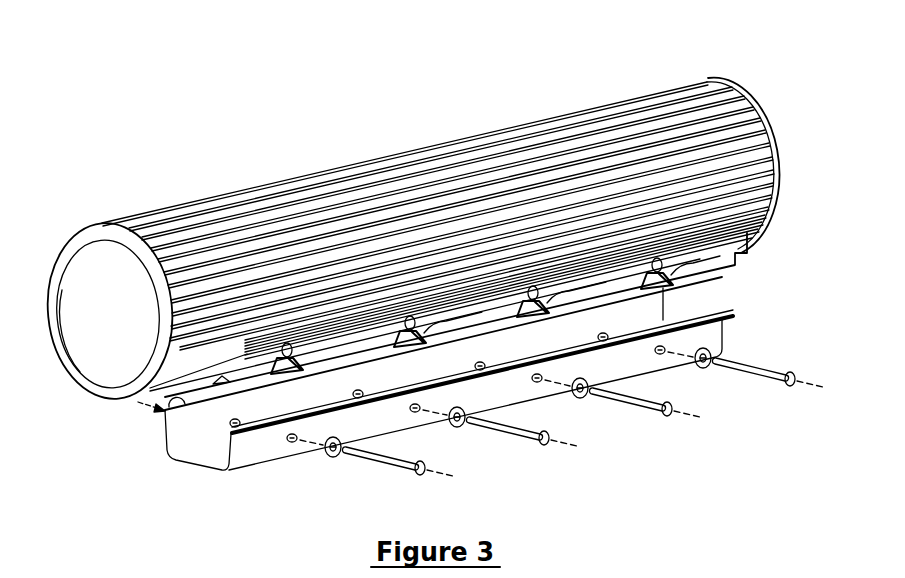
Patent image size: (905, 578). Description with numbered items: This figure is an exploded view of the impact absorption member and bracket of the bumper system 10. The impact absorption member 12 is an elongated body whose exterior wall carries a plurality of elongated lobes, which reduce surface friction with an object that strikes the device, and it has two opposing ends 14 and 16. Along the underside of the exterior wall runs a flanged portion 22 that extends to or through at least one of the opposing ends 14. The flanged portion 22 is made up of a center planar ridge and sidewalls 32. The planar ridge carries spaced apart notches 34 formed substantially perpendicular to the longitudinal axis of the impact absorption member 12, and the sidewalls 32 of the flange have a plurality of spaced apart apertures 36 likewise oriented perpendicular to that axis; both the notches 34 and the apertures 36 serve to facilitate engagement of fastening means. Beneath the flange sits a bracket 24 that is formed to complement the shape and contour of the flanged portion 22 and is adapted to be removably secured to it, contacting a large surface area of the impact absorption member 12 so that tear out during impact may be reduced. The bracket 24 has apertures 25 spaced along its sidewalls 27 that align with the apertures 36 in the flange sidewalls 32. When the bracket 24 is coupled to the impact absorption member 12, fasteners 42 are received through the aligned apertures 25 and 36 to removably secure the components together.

The bumper system 10 is at (600, 86).
The impact absorption member 12 is at (705, 85).
The opposing end 14 is at (775, 148).
The opposing end 16 is at (110, 348).
The flanged portion 22 is at (733, 242).
The bracket 24 is at (712, 366).
The apertures 25 is at (548, 373).
The sidewalls 27 is at (498, 402).
The sidewalls 32 is at (355, 338).
The notches 34 is at (640, 287).
The apertures 36 is at (672, 266).
The fasteners 42 is at (393, 466).